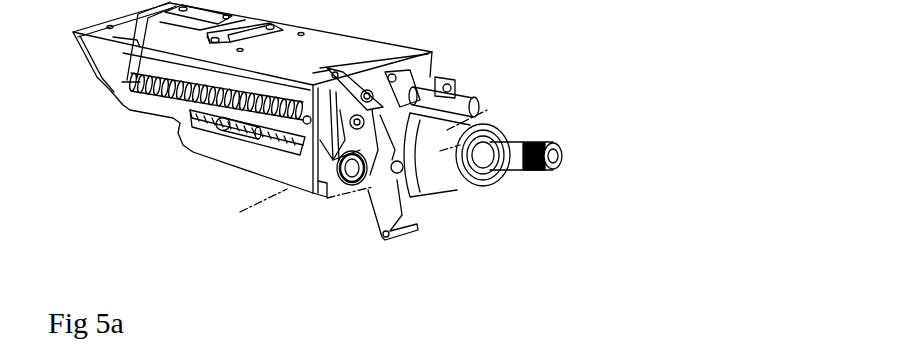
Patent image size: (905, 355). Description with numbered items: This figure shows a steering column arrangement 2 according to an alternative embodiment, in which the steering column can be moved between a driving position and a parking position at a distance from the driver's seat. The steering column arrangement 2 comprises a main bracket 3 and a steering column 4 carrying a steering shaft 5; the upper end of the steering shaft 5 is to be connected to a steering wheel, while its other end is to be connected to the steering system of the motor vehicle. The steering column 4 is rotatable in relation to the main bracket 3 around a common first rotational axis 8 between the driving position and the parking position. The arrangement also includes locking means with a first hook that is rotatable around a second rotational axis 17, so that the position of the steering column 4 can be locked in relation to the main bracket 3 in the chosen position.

The steering column arrangement 2 is at (616, 168).
The main bracket 3 is at (362, 45).
The steering column 4 is at (460, 180).
The steering shaft 5 is at (520, 147).
The first rotational axis 8 is at (240, 212).
The second rotational axis 17 is at (327, 200).